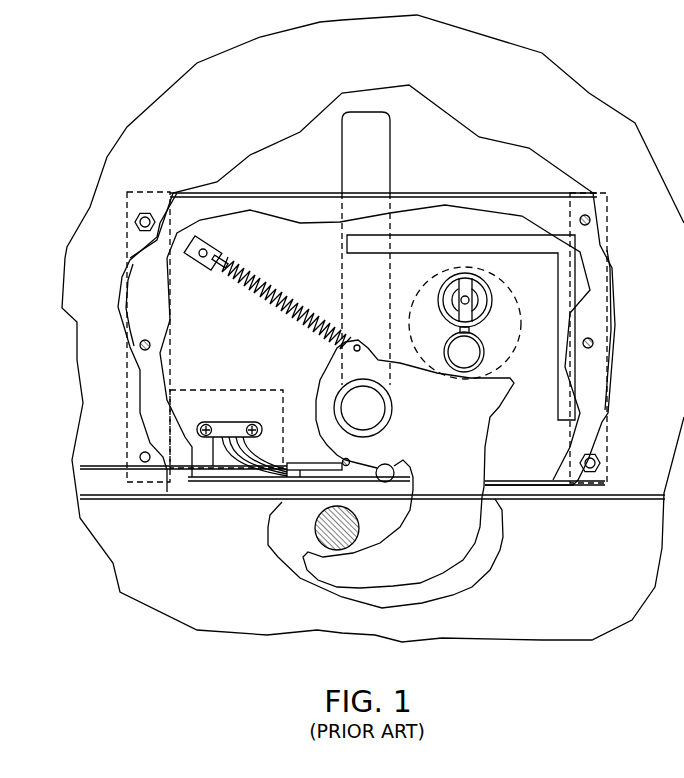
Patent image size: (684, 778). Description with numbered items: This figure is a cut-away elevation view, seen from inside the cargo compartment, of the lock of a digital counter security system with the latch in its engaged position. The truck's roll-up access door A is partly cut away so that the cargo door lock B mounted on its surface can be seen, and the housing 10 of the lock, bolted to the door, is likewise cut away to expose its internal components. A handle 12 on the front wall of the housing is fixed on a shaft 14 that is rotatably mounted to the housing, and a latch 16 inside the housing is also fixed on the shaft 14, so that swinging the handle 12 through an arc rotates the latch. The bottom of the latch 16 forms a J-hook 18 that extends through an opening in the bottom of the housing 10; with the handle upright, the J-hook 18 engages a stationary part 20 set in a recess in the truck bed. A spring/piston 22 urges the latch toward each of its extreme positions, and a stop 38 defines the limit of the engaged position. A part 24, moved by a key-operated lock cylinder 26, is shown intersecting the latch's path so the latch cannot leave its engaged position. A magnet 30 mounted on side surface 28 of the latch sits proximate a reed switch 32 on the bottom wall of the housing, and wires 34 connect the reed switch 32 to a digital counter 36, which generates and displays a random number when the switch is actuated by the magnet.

The roll-up access door A is at (490, 63).
The cargo door lock B is at (459, 193).
The housing 10 is at (532, 212).
The handle 12 is at (335, 127).
The shaft 14 is at (372, 407).
The latch 16 is at (452, 420).
The J-hook 18 is at (350, 567).
The stationary part 20 is at (343, 527).
The spring/piston 22 is at (232, 256).
The part 24 is at (473, 352).
The key-operated lock cylinder 26 is at (489, 302).
The side surface 28 is at (332, 443).
The magnet 30 is at (345, 455).
The reed switch 32 is at (312, 464).
The wires 34 is at (258, 420).
The digital counter 36 is at (192, 391).
The stop 38 is at (385, 466).